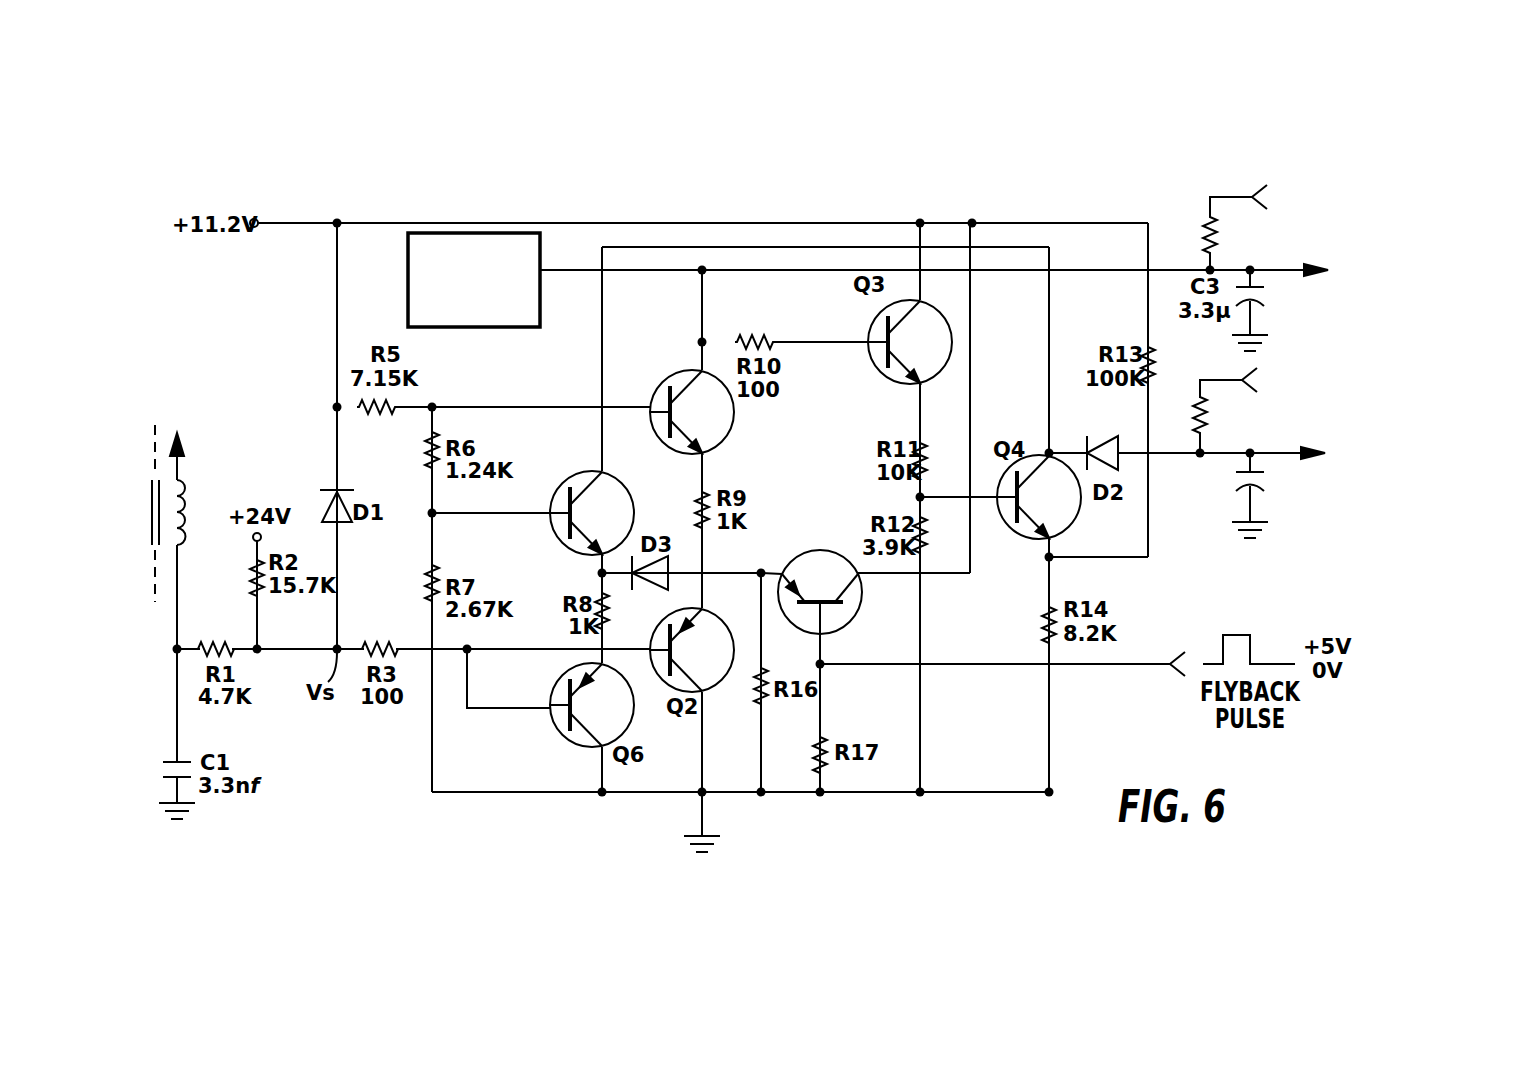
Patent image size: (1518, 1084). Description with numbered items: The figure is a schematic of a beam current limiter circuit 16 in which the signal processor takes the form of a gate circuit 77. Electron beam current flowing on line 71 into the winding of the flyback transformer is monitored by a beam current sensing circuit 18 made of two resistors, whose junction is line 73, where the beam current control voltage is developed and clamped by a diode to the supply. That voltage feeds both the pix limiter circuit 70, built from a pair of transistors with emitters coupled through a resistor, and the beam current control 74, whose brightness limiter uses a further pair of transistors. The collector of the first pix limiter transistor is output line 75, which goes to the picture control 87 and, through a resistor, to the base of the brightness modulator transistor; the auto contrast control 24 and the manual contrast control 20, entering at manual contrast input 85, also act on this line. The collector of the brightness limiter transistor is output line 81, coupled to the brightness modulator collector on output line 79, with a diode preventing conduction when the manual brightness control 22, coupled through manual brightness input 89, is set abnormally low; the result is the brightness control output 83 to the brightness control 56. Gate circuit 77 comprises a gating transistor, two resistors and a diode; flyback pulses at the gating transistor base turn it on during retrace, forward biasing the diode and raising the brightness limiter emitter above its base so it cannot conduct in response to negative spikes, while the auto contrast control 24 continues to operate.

The beam current limiter circuit 16 is at (592, 839).
The beam current sensing circuit 18 is at (224, 595).
The manual contrast control circuit 20 is at (1358, 198).
The manual brightness control circuit 22 is at (1353, 395).
The automatic contrast control circuit 24 is at (490, 328).
The brightness control 56 is at (1415, 467).
The pix limiter circuit 70 is at (674, 497).
The line 71 is at (174, 601).
The line 73 is at (258, 652).
The beam current control 74 is at (502, 545).
The output line 75 is at (700, 357).
The gate circuit 77 is at (884, 647).
The output line 79 is at (1068, 451).
The output line 81 is at (597, 453).
The brightness control output 83 is at (1283, 464).
The manual contrast input 85 is at (1225, 197).
The picture control 87 is at (1405, 275).
The manual brightness input 89 is at (1227, 381).